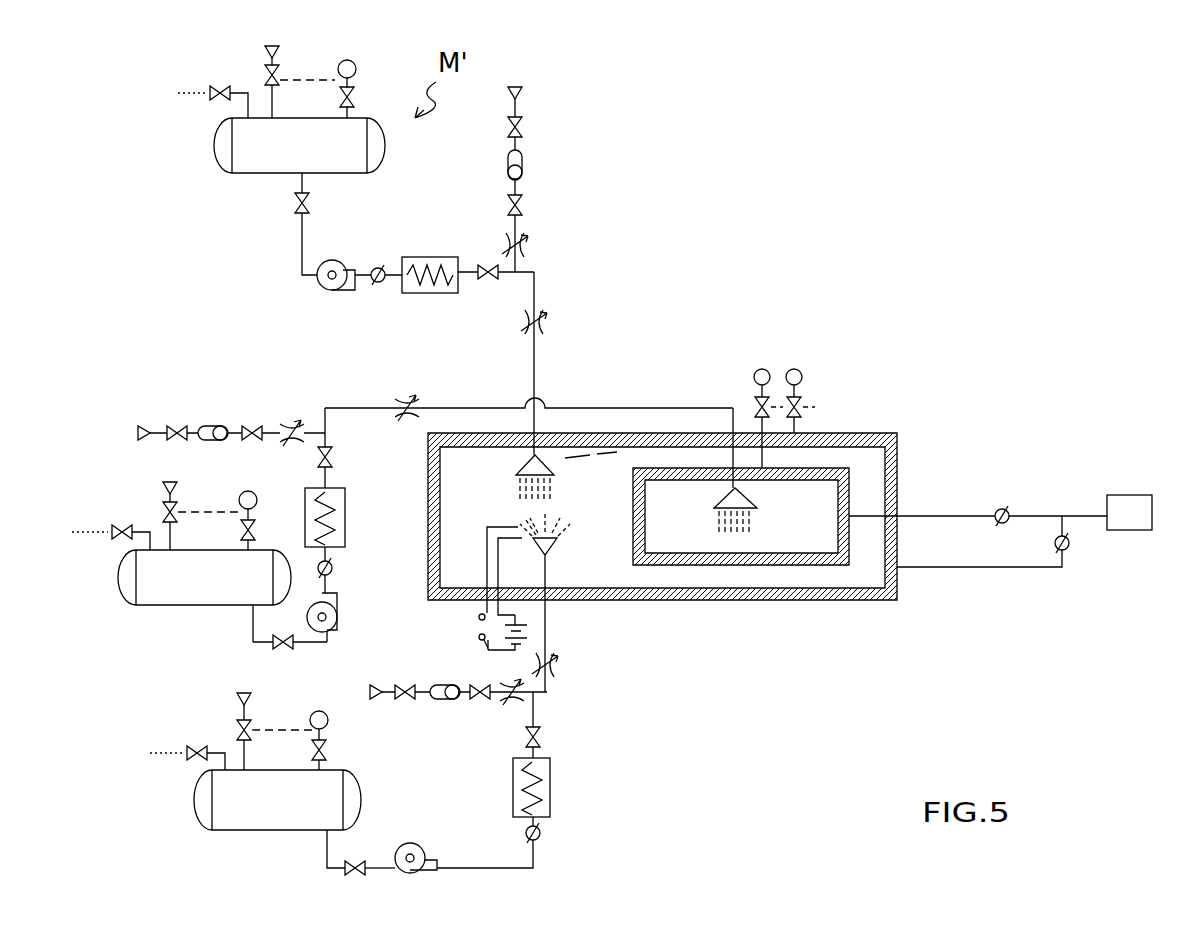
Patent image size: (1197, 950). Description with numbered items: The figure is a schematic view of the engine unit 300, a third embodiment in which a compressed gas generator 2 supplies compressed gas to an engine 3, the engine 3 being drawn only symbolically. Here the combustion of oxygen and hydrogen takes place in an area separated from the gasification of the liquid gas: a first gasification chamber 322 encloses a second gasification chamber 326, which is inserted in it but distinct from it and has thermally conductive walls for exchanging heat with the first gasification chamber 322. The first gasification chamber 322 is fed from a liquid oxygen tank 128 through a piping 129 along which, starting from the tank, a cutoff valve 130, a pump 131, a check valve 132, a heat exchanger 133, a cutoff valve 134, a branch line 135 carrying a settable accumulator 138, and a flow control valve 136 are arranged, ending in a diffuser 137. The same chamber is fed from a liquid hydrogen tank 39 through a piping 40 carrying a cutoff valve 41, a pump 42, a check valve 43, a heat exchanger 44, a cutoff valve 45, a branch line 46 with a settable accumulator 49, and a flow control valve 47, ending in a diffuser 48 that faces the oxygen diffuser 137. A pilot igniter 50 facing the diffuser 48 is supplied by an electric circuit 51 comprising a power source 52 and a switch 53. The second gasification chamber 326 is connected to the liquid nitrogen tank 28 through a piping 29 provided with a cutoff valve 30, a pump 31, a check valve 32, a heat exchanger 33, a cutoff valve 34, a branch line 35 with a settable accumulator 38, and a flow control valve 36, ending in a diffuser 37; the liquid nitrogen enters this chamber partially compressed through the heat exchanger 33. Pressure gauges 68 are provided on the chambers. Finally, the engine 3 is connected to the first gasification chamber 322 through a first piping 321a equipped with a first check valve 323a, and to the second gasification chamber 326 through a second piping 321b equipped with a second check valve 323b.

The compressed gas generator 2 is at (677, 272).
The engine 3 is at (1130, 500).
The liquid air tank 28 is at (186, 595).
The piping 29 is at (612, 408).
The cutoff valve 30 is at (285, 650).
The pump 31 is at (340, 612).
The check valve 32 is at (340, 570).
The heat exchanger 33 is at (346, 520).
The cutoff valve 34 is at (336, 457).
The branch line 35 is at (302, 426).
The flow control valve 36 is at (404, 398).
The diffuser 37 is at (712, 497).
The settable accumulator 38 is at (220, 426).
The liquid fuel tank 39 is at (272, 812).
The piping 40 is at (478, 866).
The cutoff valve 41 is at (360, 860).
The pump 42 is at (416, 852).
The check valve 43 is at (545, 835).
The heat exchanger 44 is at (552, 775).
The cutoff valve 45 is at (542, 740).
The branch line 46 is at (510, 705).
The flow control valve 47 is at (556, 662).
The diffuser 48 is at (554, 553).
The settable accumulator 49 is at (447, 700).
The pilot igniter 50 is at (524, 537).
The electric circuit 51 is at (492, 657).
The power source 52 is at (530, 624).
The switch 53 is at (478, 630).
The pressure gauge 68 is at (756, 373).
The liquid oxygen tank 128 is at (260, 157).
The piping 129 is at (537, 288).
The cutoff valve 130 is at (313, 203).
The pump 131 is at (330, 287).
The check valve 132 is at (376, 288).
The heat exchanger 133 is at (432, 295).
The cutoff valve 134 is at (484, 282).
The branch line 135 is at (518, 270).
The flow control valve 136 is at (548, 333).
The diffuser 137 is at (518, 458).
The settable accumulator 138 is at (524, 170).
The engine unit 300 is at (848, 229).
The first piping 321a is at (950, 567).
The second piping 321b is at (938, 516).
The first gasification chamber 322 is at (472, 497).
The first check valve 323a is at (1068, 552).
The second check valve 323b is at (1008, 508).
The second gasification chamber 326 is at (741, 516).